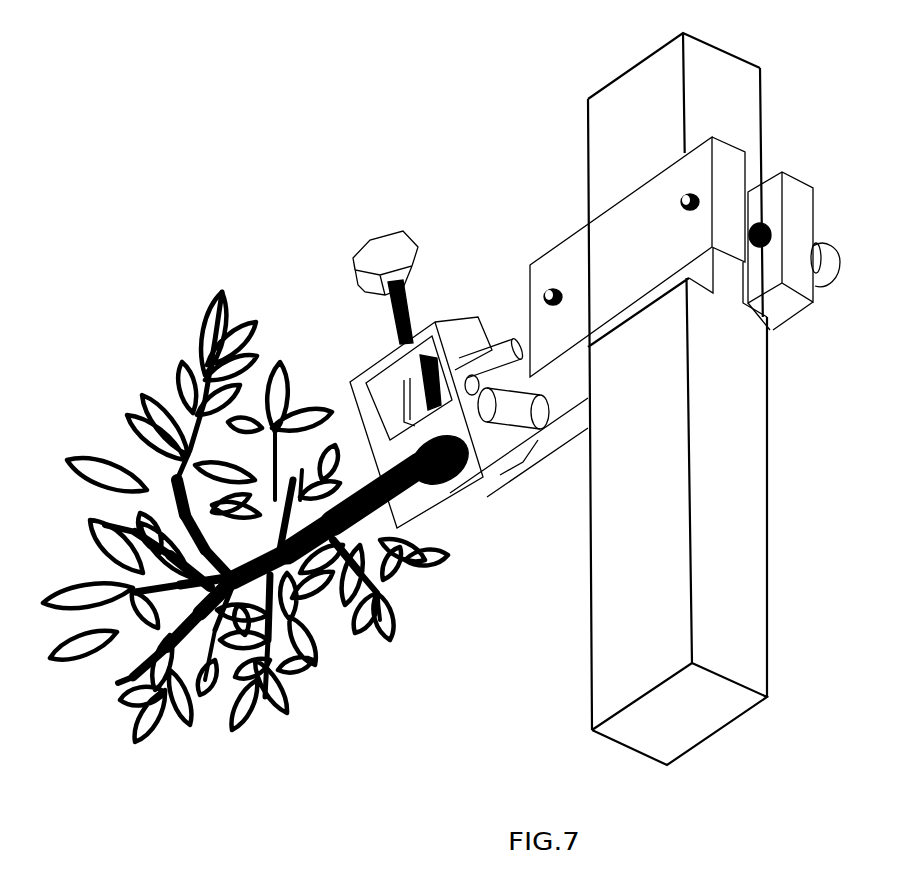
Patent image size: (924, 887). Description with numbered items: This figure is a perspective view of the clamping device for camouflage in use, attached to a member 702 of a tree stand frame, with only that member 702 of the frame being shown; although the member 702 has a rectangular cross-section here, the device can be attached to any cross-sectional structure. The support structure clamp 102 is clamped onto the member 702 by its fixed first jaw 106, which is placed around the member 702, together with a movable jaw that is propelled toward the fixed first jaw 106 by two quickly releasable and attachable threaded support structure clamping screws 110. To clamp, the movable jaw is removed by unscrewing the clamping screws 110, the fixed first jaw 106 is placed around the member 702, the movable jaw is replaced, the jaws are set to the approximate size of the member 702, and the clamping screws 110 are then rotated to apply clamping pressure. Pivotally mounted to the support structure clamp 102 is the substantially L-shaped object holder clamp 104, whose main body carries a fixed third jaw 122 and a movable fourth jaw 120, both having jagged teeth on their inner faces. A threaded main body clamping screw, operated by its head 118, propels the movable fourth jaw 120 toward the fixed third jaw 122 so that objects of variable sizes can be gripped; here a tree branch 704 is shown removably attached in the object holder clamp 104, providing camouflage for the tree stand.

The member 702 is at (723, 99).
The support structure clamp 102 is at (805, 172).
The fixed first jaw 106 is at (797, 234).
The threaded support structure clamping screws 110 is at (830, 266).
The head 118 is at (390, 224).
The L-shaped object holder clamp 104 is at (457, 303).
The movable fourth jaw 120 is at (408, 427).
The fixed third jaw 122 is at (447, 503).
The tree branch 704 is at (123, 682).